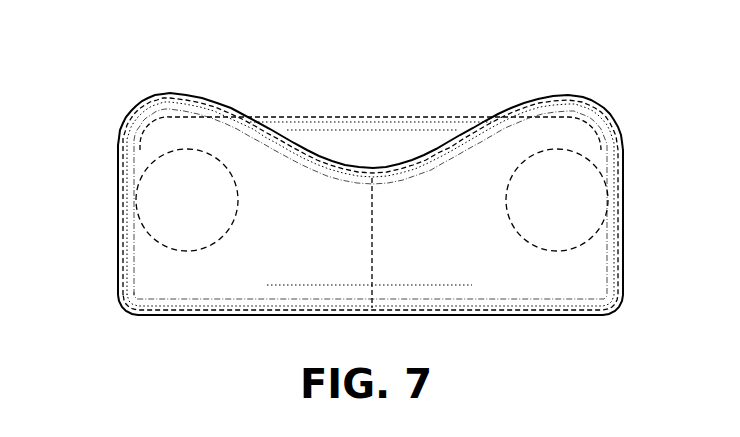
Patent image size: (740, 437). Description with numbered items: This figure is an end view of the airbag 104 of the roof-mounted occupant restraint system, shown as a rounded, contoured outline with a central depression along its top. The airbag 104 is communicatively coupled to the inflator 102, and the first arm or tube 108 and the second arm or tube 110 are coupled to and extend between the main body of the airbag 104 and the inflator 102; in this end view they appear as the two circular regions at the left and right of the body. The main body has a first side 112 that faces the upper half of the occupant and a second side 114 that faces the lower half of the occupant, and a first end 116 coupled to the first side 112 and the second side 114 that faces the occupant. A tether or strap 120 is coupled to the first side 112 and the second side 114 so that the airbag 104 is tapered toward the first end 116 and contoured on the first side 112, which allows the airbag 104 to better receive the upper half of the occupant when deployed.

The inflator 102 is at (207, 93).
The airbag 104 is at (136, 68).
The first arm or tube 108 is at (590, 160).
The second arm or tube 110 is at (152, 160).
The first side 112 is at (415, 159).
The second side 114 is at (285, 317).
The first end 116 is at (433, 255).
The tether or strap 120 is at (365, 250).